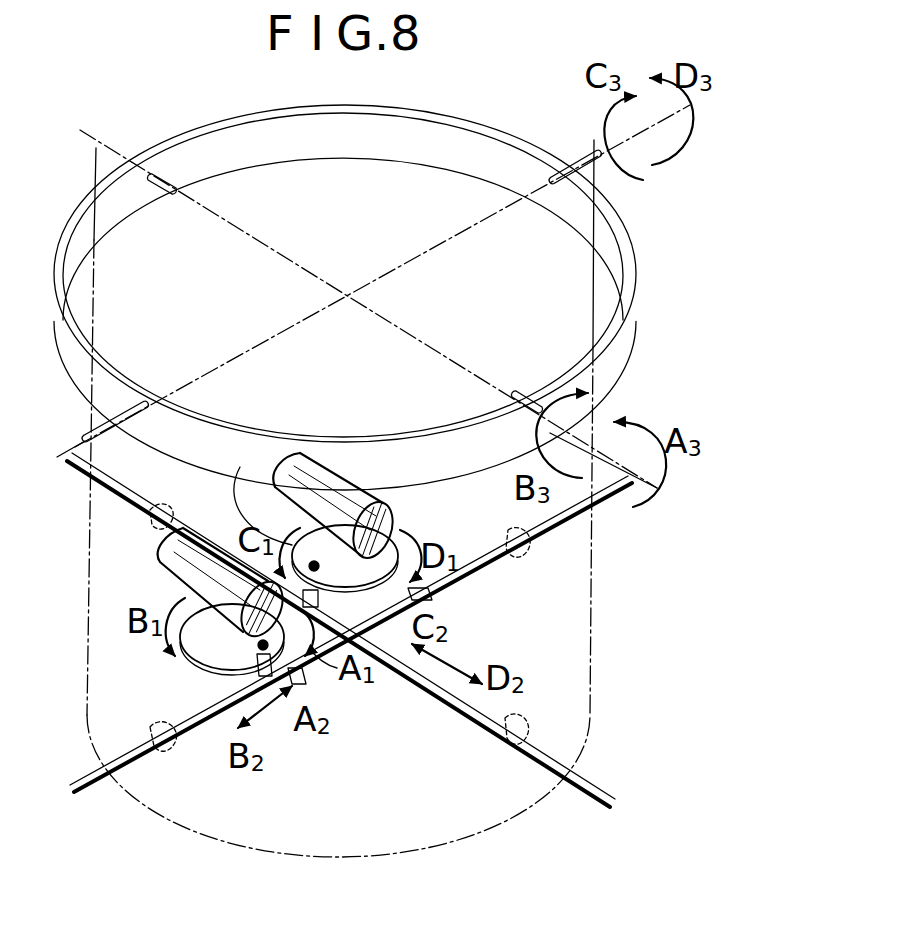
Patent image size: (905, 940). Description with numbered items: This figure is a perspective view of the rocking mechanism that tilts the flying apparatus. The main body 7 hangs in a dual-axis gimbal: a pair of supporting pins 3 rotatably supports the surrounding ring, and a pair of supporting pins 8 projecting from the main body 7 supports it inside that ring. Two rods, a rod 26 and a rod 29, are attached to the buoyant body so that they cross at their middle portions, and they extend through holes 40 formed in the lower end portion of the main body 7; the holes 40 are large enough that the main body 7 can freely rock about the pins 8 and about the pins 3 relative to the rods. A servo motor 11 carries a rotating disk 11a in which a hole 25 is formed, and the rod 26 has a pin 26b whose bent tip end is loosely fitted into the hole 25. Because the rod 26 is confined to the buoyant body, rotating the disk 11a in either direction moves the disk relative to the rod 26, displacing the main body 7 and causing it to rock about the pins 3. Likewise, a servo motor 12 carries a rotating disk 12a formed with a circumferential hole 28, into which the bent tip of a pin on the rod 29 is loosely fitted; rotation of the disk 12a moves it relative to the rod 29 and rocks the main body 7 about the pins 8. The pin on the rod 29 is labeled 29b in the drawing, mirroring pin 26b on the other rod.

The supporting pin 3 is at (150, 432).
The main body 7 is at (595, 622).
The supporting pin 8 is at (166, 178).
The servo motor 11 is at (328, 482).
The rotating disk 11a is at (400, 538).
The servo motor 12 is at (210, 565).
The rotating disk 12a is at (185, 652).
The hole 25 is at (255, 486).
The rod 26 is at (450, 702).
The pin 26b is at (422, 594).
The hole 28 is at (240, 655).
The rod 29 is at (103, 800).
The second rod mount 29b is at (305, 680).
The hole 40 is at (157, 533).